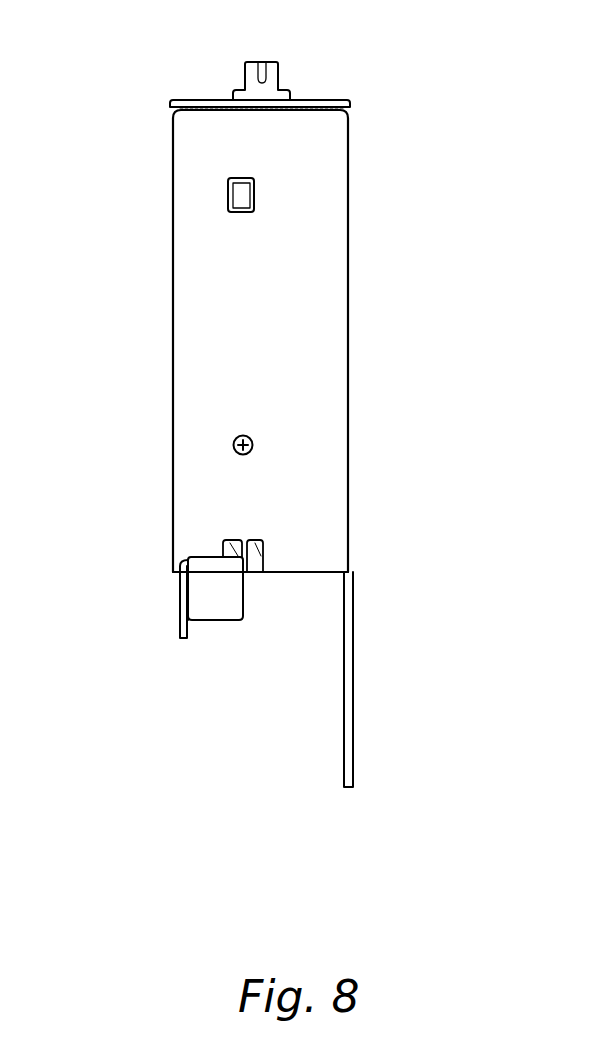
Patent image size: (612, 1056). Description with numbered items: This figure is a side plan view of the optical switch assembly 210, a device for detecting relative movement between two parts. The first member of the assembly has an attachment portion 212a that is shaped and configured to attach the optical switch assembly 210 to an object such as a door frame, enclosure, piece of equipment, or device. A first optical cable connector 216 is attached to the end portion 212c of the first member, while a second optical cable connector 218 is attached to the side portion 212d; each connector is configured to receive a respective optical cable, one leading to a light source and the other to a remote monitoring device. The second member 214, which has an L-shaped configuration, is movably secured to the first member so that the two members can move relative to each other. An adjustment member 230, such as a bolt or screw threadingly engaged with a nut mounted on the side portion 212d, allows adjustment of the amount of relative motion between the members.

The optical switch assembly 210 is at (274, 408).
The attachment portion 212a is at (353, 640).
The end portion 212c is at (202, 100).
The side portion 212d is at (323, 340).
The second member 214 is at (221, 622).
The first optical cable connector 216 is at (274, 78).
The second optical cable connector 218 is at (226, 200).
The adjustment member 230 is at (232, 452).